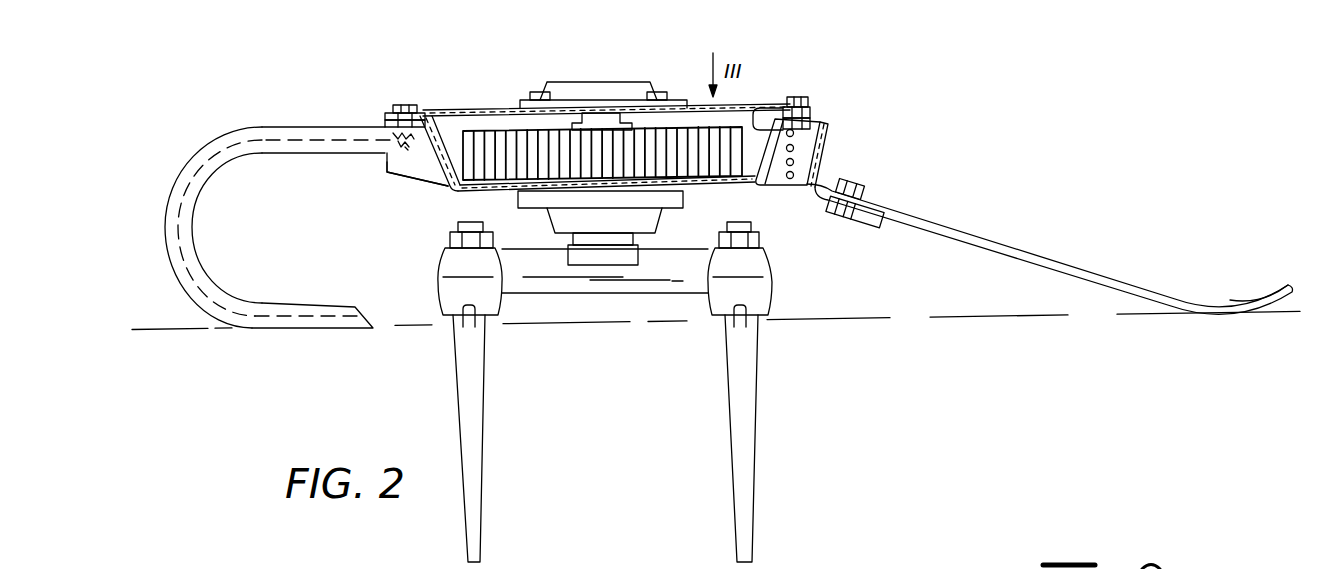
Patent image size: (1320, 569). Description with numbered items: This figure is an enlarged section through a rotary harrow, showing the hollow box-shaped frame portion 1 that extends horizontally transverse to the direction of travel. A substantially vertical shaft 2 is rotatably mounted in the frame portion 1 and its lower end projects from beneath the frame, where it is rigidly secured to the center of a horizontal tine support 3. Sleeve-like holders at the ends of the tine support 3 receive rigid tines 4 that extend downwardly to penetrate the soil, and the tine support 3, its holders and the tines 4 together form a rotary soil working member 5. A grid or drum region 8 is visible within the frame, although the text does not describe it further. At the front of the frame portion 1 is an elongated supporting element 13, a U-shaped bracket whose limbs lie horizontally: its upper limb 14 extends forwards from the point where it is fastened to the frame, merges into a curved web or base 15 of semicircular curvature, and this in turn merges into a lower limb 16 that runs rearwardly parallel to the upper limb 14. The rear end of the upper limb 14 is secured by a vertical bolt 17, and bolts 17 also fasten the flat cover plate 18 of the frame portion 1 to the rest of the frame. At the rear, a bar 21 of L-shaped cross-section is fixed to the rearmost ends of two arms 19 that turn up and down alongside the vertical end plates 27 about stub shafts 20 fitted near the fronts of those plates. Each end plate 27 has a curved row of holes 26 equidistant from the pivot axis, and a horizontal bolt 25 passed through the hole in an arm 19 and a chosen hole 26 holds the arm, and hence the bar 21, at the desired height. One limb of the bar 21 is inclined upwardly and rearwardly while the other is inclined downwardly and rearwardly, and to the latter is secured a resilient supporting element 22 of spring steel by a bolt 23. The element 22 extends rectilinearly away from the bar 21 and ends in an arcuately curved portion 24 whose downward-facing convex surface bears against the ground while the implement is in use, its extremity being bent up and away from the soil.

The hollow box-shaped frame portion 1 is at (605, 125).
The shaft 2 is at (600, 116).
The tine support 3 is at (567, 288).
The tine 4 is at (460, 400).
The rotary soil working member 5 is at (606, 409).
The drum 8 is at (490, 167).
The elongated supporting element 13 is at (258, 210).
The upper limb 14 is at (302, 110).
The curved web or base 15 is at (190, 232).
The lower limb 16 is at (304, 305).
The bolt 17 is at (395, 105).
The upper wall or cover plate 18 is at (470, 110).
The arm 19 is at (805, 122).
The stub shaft 20 is at (400, 155).
The bar of L-shaped cross-section 21 is at (830, 160).
The elongated supporting element 22 is at (1038, 250).
The bolt 23 is at (860, 184).
The arcuately curved portion 24 is at (1232, 310).
The bolt 25 is at (758, 117).
The hole 26 is at (797, 162).
The end plate 27 is at (418, 173).